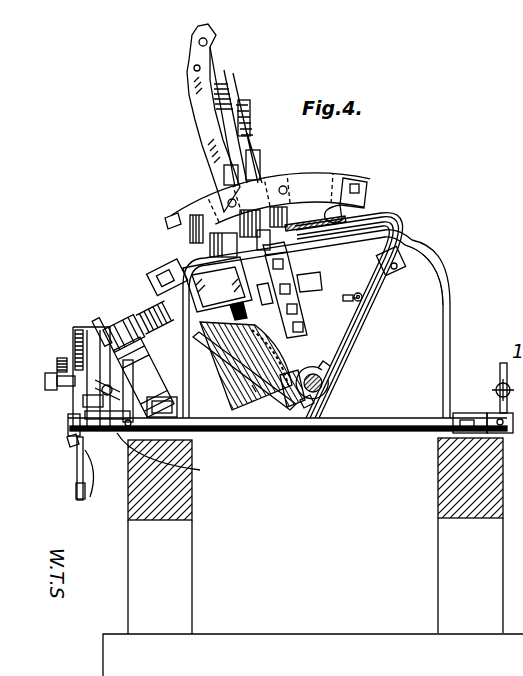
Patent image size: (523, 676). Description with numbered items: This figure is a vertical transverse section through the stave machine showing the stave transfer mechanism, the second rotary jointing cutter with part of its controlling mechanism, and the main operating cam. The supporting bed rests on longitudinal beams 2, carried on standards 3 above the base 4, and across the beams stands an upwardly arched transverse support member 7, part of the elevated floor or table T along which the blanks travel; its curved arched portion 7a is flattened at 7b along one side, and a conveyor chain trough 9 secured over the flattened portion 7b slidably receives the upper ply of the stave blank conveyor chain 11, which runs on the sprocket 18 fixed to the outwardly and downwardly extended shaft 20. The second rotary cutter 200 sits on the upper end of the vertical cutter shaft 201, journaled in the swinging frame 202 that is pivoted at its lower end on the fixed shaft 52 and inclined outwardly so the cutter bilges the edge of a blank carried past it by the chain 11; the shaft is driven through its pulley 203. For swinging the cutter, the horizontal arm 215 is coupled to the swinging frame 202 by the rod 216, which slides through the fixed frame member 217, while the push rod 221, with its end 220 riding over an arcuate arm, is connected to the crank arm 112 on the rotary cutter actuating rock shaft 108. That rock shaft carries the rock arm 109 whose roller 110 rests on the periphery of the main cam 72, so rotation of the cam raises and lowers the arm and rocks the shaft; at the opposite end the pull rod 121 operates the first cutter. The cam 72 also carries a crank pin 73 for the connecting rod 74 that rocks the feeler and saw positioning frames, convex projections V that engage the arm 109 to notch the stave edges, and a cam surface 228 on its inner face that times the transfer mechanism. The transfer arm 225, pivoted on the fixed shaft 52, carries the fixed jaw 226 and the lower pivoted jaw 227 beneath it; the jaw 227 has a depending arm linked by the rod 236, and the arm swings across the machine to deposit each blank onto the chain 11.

The longitudinal beams 2 is at (190, 507).
The standard 3 is at (183, 581).
The base 4 is at (262, 633).
The upwardly arched transverse support member 7 is at (451, 325).
The arched portion 7a is at (403, 271).
The flattened portion 7b is at (287, 272).
The conveyor chain trough 9 is at (303, 217).
The stave blank conveyor chain 11 is at (290, 213).
The elevated floor, platform, or table T is at (348, 214).
The sprocket 18 is at (343, 298).
The shaft 20 is at (307, 285).
The fixed shaft 52 is at (327, 382).
The main cam 72 is at (77, 458).
The crank pin 73 is at (45, 380).
The connecting rod 74 is at (58, 360).
The rotary cutter actuating rock shaft 108 is at (378, 422).
The rock arm 109 is at (97, 373).
The roller 110 is at (75, 330).
The crank arm 112 is at (130, 370).
The pull rod 121 is at (495, 383).
The second rotary cutter 200 is at (155, 280).
The cutter shaft 201 is at (147, 313).
The swinging frame 202 is at (285, 408).
The pulley 203 is at (252, 385).
The horizontal arm 215 is at (107, 330).
The rod 216 is at (197, 353).
The fixed frame member 217 is at (217, 288).
The push rod end 220 is at (238, 392).
The push rod 221 is at (200, 470).
The transfer arm 225 is at (358, 322).
The fixed jaw 226 is at (363, 223).
The pivotally mounted jaw 227 is at (377, 230).
The cam surface 228 is at (95, 510).
The rod 236 is at (357, 300).
The convex projections V is at (77, 483).